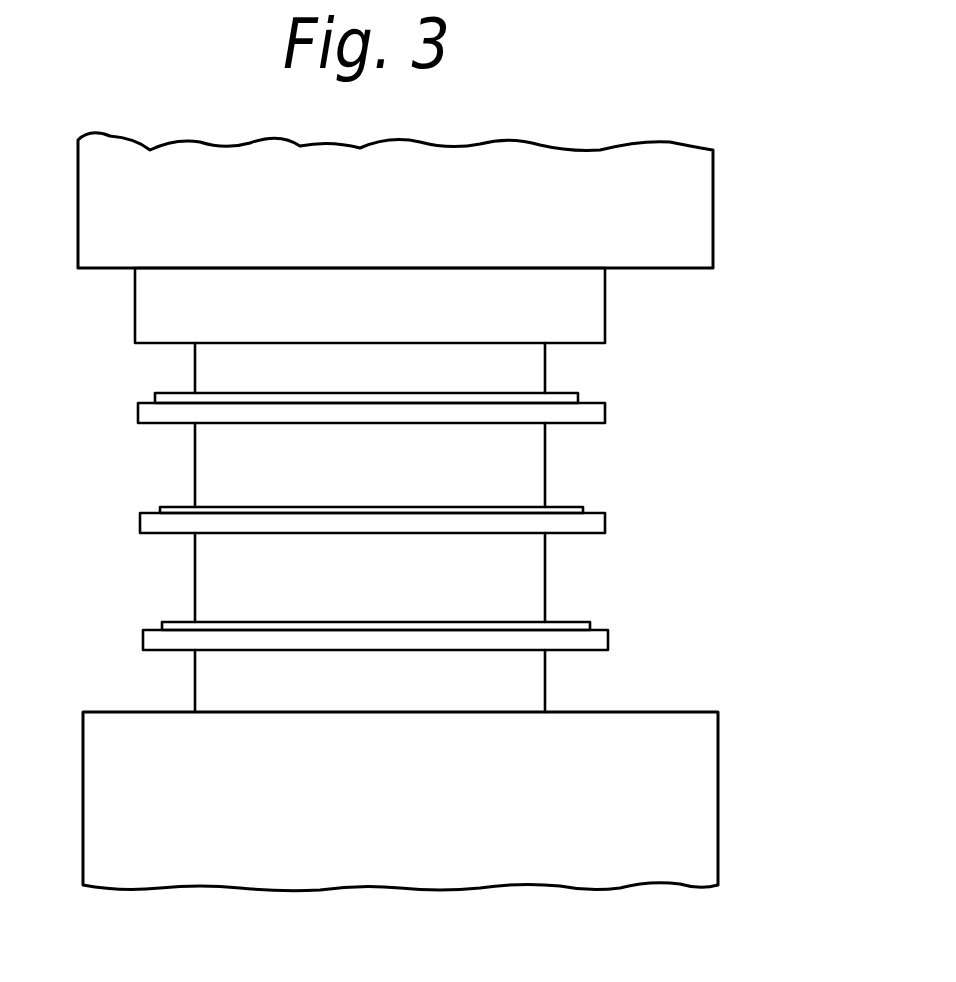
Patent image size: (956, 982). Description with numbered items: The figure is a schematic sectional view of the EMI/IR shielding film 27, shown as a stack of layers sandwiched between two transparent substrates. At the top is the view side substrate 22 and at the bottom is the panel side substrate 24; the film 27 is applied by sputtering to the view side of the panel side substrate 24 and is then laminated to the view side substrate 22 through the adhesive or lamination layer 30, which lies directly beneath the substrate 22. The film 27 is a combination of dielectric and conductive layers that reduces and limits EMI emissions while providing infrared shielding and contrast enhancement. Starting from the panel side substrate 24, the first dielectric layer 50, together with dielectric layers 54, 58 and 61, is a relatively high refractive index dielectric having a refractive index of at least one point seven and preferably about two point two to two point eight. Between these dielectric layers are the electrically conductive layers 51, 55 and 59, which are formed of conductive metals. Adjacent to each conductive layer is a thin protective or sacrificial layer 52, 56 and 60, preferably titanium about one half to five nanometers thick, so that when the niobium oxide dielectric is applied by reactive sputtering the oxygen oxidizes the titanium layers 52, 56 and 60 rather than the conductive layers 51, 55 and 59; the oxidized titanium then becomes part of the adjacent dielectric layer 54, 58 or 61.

The view side substrate 22 is at (688, 220).
The adhesive or lamination layer 30 is at (588, 303).
The panel side substrate 24 is at (598, 864).
The EMI/IR shielding film 27 is at (96, 325).
The high refractive index dielectric layer 61 is at (528, 364).
The protective titanium layer 60 is at (578, 395).
The electrically conductive layer 59 is at (605, 413).
The high refractive index dielectric layer 58 is at (530, 473).
The protective titanium layer 56 is at (583, 509).
The electrically conductive layer 55 is at (605, 523).
The high refractive index dielectric layer 54 is at (530, 582).
The protective titanium layer 52 is at (590, 626).
The electrically conductive layer 51 is at (608, 638).
The high refractive index dielectric layer 50 is at (540, 685).